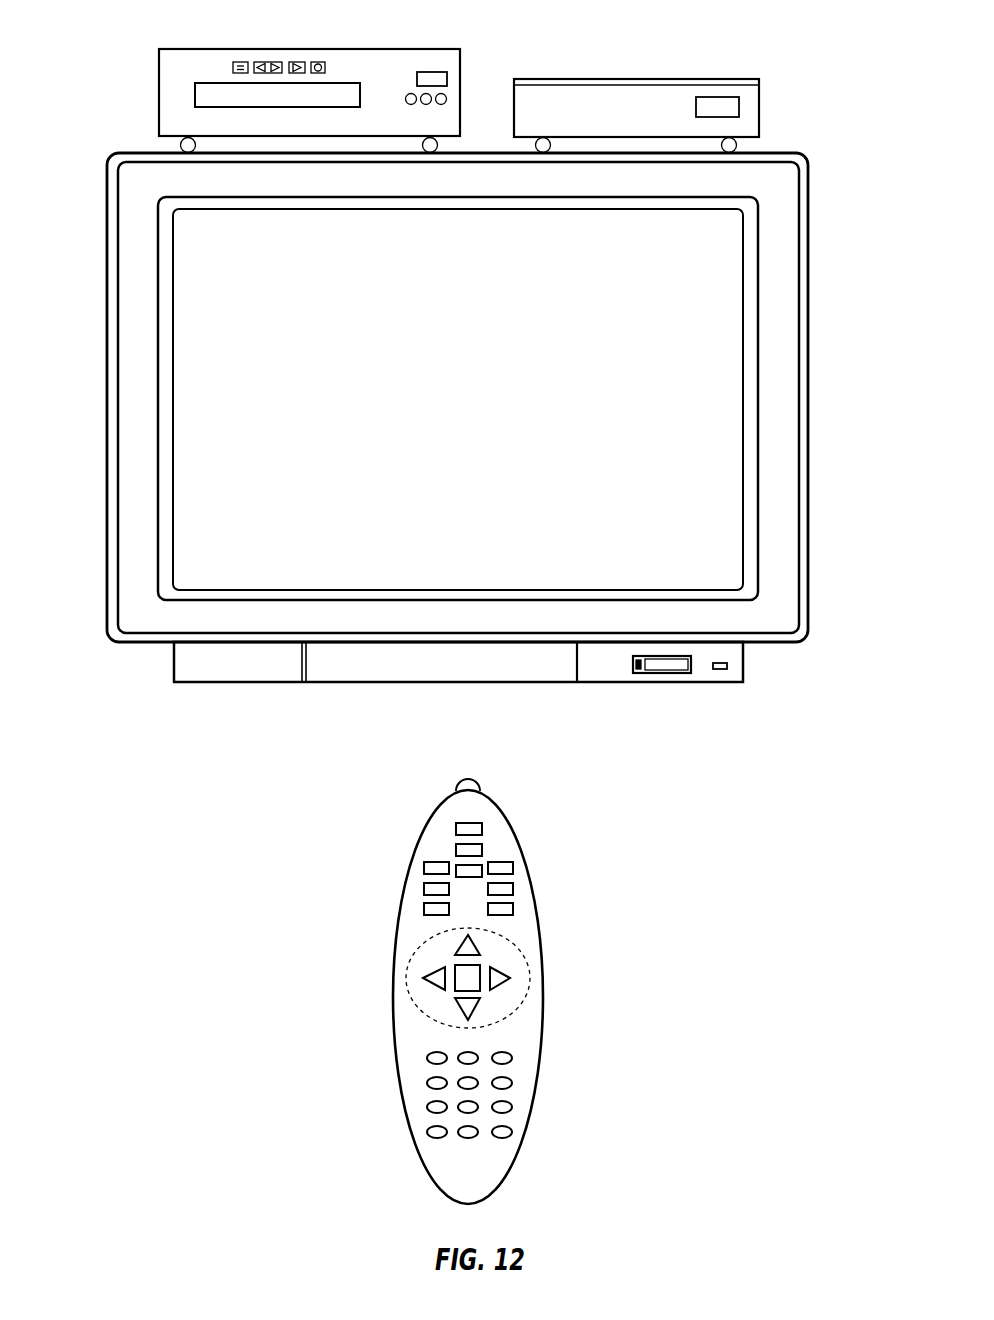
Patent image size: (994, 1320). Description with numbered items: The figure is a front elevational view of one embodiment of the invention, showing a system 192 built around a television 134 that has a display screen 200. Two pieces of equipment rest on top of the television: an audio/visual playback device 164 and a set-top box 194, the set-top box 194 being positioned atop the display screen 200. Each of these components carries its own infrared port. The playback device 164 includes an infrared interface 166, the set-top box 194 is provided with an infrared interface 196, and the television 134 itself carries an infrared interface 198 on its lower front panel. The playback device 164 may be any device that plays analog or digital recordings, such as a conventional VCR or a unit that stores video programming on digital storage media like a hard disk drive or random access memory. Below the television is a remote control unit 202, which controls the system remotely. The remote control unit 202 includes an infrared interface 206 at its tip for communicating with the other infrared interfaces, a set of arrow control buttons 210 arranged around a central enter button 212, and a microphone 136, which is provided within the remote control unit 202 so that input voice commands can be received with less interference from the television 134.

The system 192 is at (83, 283).
The audio/visual playback device 164 is at (341, 81).
The infrared interface 166 is at (470, 48).
The set-top box 194 is at (654, 96).
The infrared interface 196 is at (745, 78).
The television 134 is at (500, 447).
The display screen 200 is at (533, 399).
The infrared interface 198 is at (699, 699).
The remote control unit 202 is at (633, 870).
The infrared interface 206 is at (509, 760).
The microphone 136 is at (517, 853).
The enter button 212 is at (529, 935).
The arrow control buttons 210 is at (548, 952).